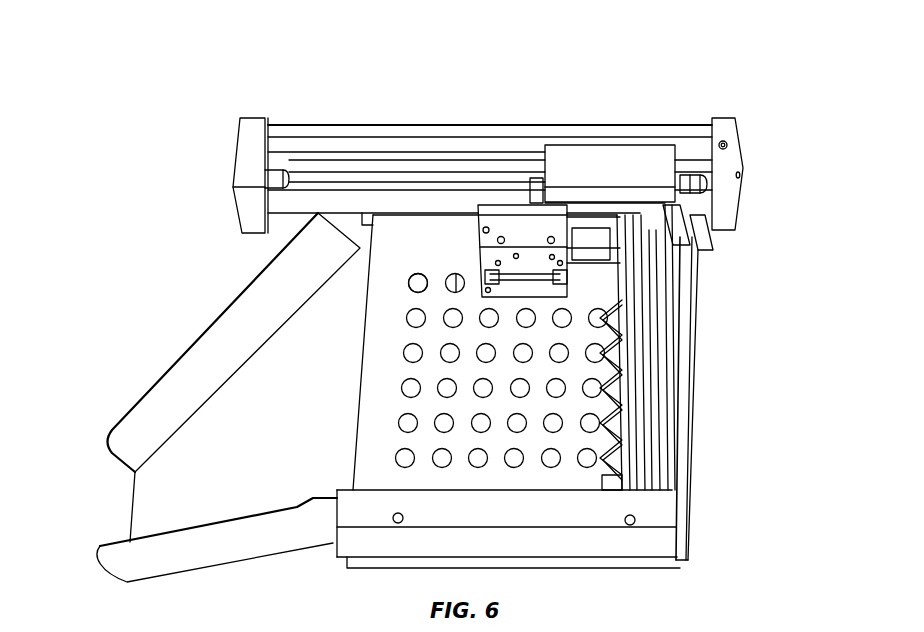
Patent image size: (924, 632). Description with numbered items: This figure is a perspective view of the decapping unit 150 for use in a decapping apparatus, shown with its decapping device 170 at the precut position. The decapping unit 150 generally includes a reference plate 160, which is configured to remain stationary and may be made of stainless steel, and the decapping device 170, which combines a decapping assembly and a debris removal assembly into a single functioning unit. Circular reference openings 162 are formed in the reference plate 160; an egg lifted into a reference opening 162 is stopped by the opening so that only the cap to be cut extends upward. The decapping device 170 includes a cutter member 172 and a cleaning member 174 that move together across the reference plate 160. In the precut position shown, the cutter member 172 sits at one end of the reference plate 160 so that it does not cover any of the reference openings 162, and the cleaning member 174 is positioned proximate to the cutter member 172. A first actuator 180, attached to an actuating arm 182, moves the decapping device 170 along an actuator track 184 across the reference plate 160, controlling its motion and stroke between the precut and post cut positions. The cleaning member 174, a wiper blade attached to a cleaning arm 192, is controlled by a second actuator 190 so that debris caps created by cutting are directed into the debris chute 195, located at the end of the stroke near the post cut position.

The decapping unit 150 is at (781, 98).
The reference plate 160 is at (390, 247).
The reference opening 162 is at (416, 272).
The decapping device 170 is at (619, 112).
The cutter member 172 is at (652, 432).
The cleaning member 174 is at (633, 467).
The first actuator 180 is at (702, 179).
The actuating arm 182 is at (672, 298).
The actuator track 184 is at (337, 125).
The second actuator 190 is at (515, 223).
The cleaning arm 192 is at (655, 348).
The debris chute 195 is at (165, 500).